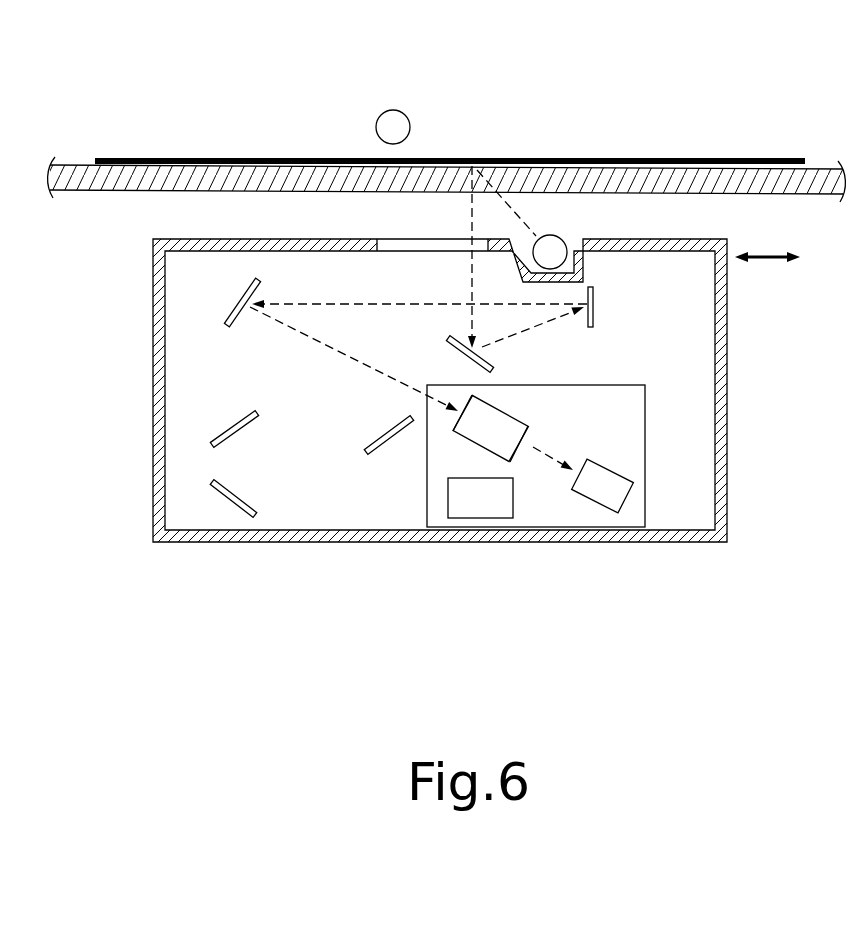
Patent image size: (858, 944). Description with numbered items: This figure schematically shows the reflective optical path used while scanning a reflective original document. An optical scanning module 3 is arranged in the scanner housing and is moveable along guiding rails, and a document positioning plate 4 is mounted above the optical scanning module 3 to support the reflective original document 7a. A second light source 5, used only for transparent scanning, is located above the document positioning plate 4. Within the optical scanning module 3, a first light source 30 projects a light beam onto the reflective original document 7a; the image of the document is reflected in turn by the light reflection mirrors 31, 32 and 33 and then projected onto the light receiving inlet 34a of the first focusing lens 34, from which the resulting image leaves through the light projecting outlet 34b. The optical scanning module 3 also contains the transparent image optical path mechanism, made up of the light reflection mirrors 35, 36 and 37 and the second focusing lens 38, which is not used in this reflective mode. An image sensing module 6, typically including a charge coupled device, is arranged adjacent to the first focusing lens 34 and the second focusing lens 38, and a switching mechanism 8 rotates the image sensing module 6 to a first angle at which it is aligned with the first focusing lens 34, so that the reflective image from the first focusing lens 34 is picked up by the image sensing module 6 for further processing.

The optical scanning module 3 is at (153, 492).
The document positioning plate 4 is at (185, 183).
The second light source 5 is at (395, 120).
The image sensing module 6 is at (615, 502).
The reflective original document 7a is at (285, 157).
The switching mechanism 8 is at (645, 437).
The first light source 30 is at (550, 240).
The light reflection mirror 31 is at (492, 366).
The light reflection mirror 32 is at (594, 316).
The light reflection mirror 33 is at (231, 314).
The first focusing lens 34 is at (517, 427).
The light receiving inlet 34a is at (457, 428).
The light projecting outlet 34b is at (510, 452).
The light reflection mirror 35 is at (375, 455).
The light reflection mirror 36 is at (220, 436).
The light reflection mirror 37 is at (223, 493).
The second focusing lens 38 is at (468, 508).